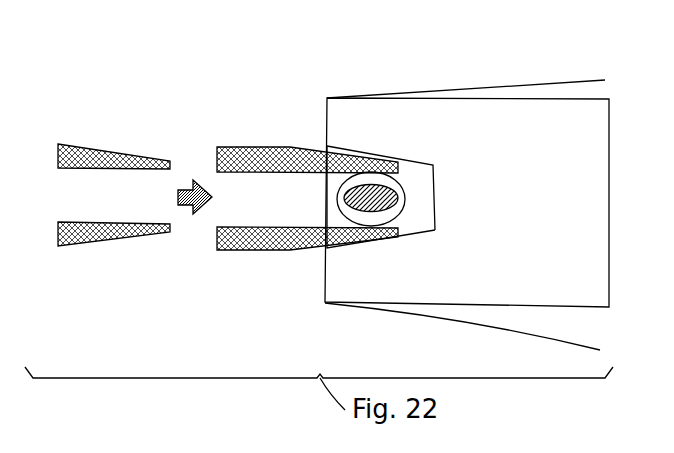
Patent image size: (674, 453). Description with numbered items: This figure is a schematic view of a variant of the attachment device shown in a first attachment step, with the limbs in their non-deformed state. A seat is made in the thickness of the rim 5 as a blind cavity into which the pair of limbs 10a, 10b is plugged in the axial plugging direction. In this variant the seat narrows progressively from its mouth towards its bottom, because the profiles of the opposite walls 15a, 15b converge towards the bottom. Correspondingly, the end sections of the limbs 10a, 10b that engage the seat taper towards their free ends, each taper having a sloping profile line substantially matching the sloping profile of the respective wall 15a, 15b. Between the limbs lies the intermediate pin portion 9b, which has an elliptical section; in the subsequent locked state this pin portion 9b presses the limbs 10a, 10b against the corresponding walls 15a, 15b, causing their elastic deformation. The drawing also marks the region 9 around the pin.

The rim 5 is at (577, 92).
The receptacle opening 9 is at (410, 188).
The intermediate pin portion 9b is at (336, 200).
The limb 10a is at (135, 152).
The limb 10b is at (130, 237).
The wall 15a is at (418, 165).
The wall 15b is at (420, 235).